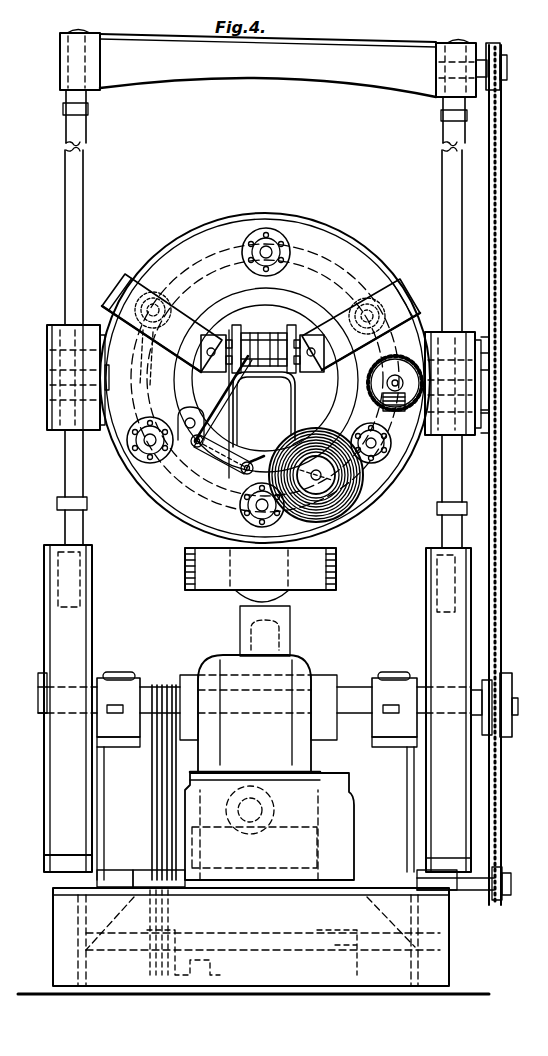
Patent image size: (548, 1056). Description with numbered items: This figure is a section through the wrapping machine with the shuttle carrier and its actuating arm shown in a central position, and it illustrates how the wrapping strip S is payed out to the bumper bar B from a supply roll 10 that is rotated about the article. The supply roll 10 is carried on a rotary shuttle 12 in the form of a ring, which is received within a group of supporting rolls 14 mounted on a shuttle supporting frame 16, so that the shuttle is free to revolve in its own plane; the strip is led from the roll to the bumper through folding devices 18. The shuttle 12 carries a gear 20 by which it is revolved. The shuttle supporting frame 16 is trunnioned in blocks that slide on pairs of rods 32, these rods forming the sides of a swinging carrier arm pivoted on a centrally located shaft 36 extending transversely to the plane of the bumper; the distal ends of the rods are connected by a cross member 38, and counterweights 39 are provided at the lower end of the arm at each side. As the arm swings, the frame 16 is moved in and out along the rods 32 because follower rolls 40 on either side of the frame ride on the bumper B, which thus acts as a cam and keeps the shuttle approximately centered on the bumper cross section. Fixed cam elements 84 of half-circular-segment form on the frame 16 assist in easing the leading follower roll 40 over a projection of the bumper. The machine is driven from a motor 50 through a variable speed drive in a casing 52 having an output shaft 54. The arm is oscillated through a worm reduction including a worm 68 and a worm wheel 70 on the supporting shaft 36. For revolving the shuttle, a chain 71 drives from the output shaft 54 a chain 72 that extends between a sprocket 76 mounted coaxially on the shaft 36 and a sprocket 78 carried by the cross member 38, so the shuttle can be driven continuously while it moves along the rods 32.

The supply roll 10 is at (372, 487).
The rotary shuttle 12 is at (316, 308).
The supporting rolls 14 is at (243, 253).
The shuttle supporting frame 16 is at (341, 233).
The folding devices 18 is at (237, 434).
The gear 20 is at (410, 318).
The rods 32 is at (88, 210).
The shaft 36 is at (355, 694).
The cross member 38 is at (395, 52).
The counterweights 39 is at (52, 838).
The follower rolls 40 is at (269, 346).
The motor 50 is at (304, 668).
The casing 52 is at (346, 834).
The output shaft 54 is at (477, 891).
The worm 68 is at (262, 818).
The worm wheel 70 is at (238, 644).
The chain 71 is at (504, 806).
The chain 72 is at (500, 240).
The sprocket 76 is at (492, 688).
The sprocket 78 is at (497, 50).
The cam elements 84 is at (185, 570).
The bumper bar B is at (254, 412).
The wrapping strip S is at (200, 398).